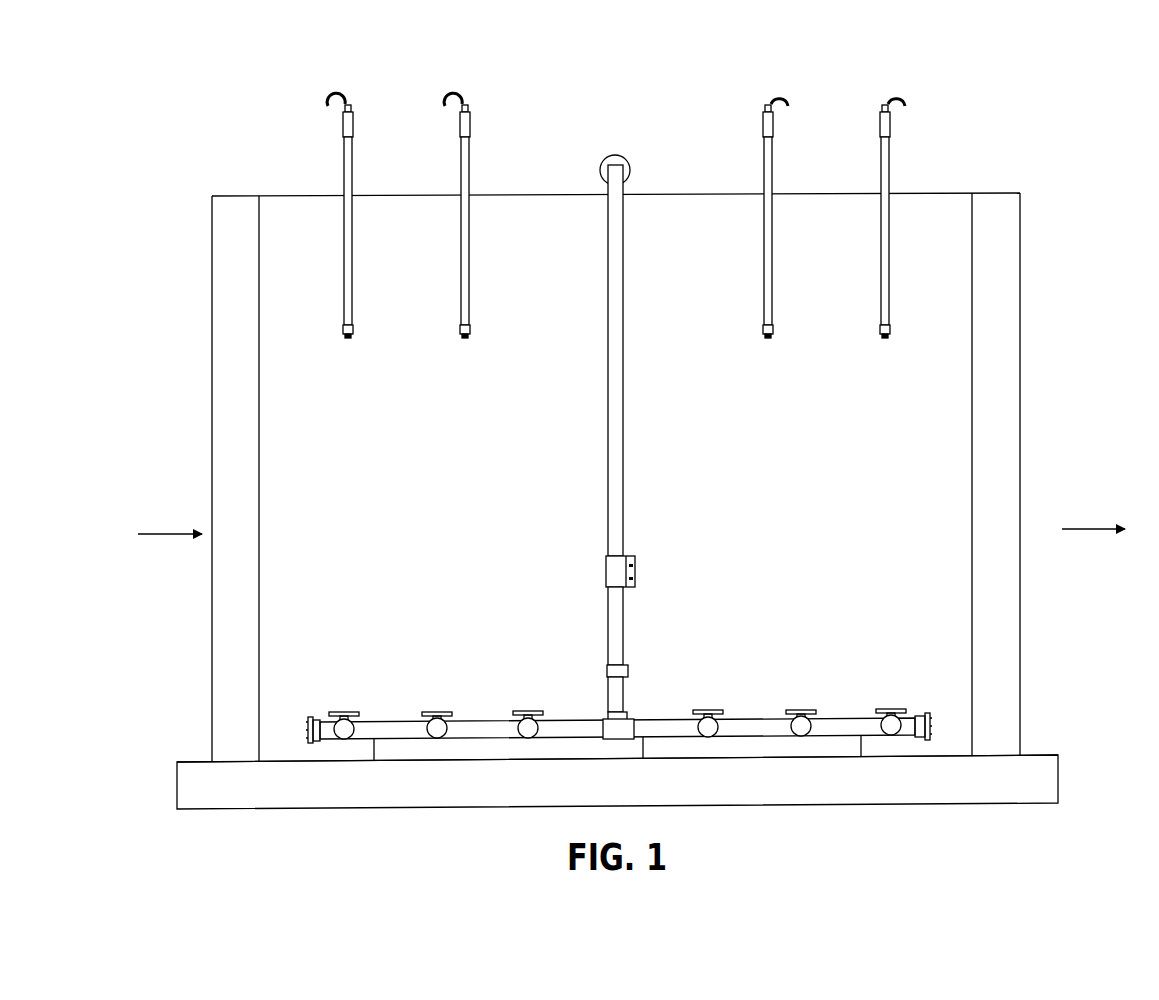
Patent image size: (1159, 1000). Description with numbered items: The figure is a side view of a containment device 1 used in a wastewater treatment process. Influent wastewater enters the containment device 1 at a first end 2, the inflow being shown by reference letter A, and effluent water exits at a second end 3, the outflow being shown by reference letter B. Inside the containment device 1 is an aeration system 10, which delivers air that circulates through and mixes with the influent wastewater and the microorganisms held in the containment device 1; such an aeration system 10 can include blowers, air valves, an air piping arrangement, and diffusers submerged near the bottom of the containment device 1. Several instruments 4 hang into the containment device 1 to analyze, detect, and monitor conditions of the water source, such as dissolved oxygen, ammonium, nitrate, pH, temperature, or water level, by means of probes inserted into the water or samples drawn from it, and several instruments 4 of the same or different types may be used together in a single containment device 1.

The containment device 1 is at (200, 94).
The first end 2 is at (212, 635).
The second end 3 is at (1020, 640).
The instruments 4 is at (346, 103).
The aeration system 10 is at (616, 168).